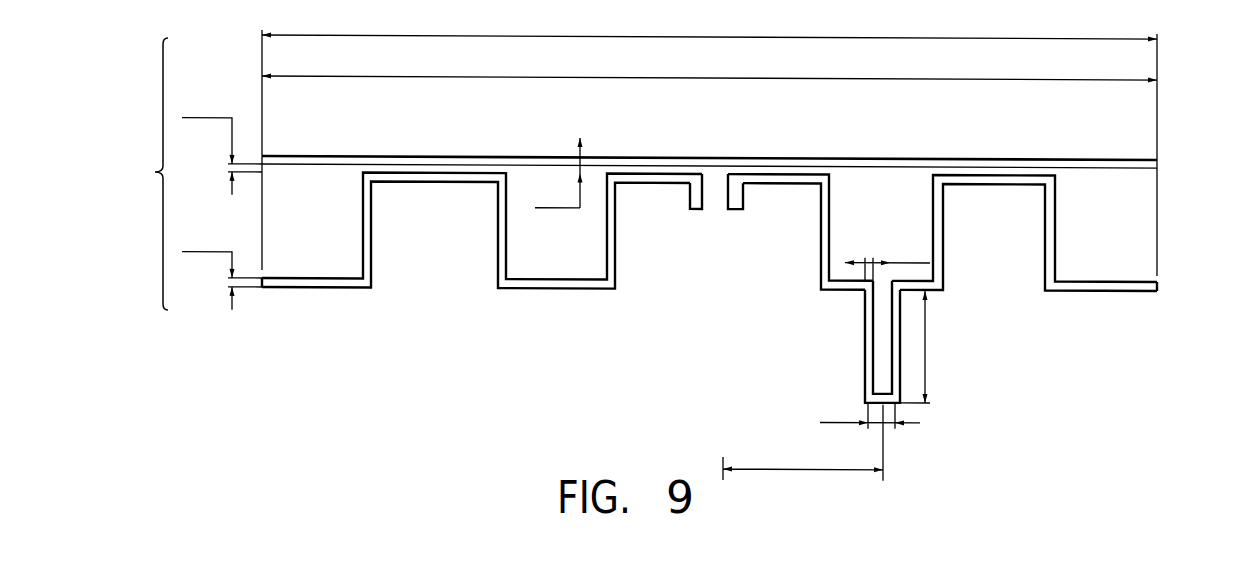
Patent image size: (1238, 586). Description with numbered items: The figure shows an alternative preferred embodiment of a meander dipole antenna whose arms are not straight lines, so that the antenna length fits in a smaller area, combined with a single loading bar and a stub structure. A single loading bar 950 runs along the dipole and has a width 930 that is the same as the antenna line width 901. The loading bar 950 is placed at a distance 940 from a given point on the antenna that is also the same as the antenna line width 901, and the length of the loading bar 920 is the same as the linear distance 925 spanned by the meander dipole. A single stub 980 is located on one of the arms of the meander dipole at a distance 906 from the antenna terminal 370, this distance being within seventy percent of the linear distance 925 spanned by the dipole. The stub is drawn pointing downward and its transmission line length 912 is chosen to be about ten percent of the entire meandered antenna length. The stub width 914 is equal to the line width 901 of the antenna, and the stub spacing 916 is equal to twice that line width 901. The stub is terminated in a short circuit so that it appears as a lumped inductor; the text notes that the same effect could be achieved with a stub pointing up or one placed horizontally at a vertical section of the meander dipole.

The length of the loading bar 920 is at (680, 36).
The linear distance spanned by the meander dipole 925 is at (680, 76).
The distance of the loading bar from the antenna 940 is at (200, 118).
The antenna line width 901 is at (200, 252).
The loading bar 950 is at (1157, 163).
The width of the loading bar 930 is at (550, 208).
The antenna terminal 370 is at (732, 215).
The stub width 914 is at (905, 263).
The transmission line length 912 is at (928, 353).
The stub spacing 916 is at (825, 423).
The distance of the stub from the antenna terminal 906 is at (790, 470).
The stub 980 is at (903, 405).